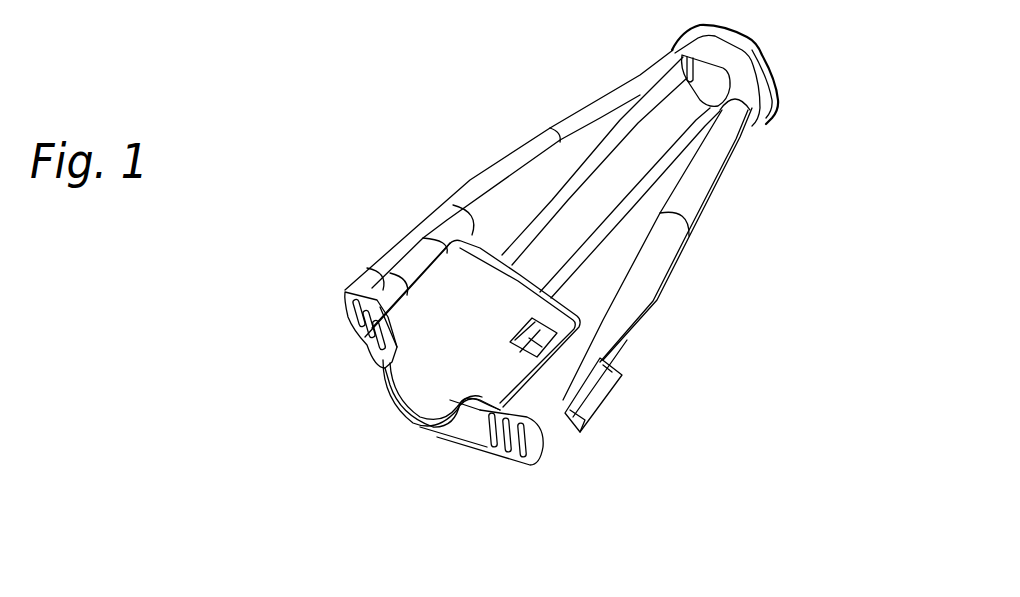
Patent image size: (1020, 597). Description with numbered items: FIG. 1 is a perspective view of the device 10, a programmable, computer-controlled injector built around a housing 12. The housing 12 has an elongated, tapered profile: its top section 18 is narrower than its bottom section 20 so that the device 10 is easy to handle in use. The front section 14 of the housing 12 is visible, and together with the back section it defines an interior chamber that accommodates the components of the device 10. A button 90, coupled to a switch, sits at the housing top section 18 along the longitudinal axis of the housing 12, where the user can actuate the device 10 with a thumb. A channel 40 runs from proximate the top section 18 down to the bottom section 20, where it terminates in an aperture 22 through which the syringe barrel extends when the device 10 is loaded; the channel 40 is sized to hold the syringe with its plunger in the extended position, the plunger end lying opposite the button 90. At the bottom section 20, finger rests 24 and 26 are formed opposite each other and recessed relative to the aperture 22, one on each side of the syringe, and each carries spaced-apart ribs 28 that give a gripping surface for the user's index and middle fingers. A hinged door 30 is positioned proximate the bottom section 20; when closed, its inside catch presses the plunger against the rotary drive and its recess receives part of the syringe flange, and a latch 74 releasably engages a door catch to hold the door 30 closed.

The device 10 is at (735, 253).
The housing 12 is at (657, 300).
The front section 14 is at (500, 155).
The top section 18 is at (770, 115).
The bottom section 20 is at (493, 452).
The aperture 22 is at (403, 410).
The finger rest 24 is at (365, 340).
The finger rest 26 is at (520, 467).
The ribs 28 is at (497, 413).
The hinged door 30 is at (453, 287).
The channel 40 is at (655, 125).
The latch 74 is at (540, 345).
The button 90 is at (752, 50).